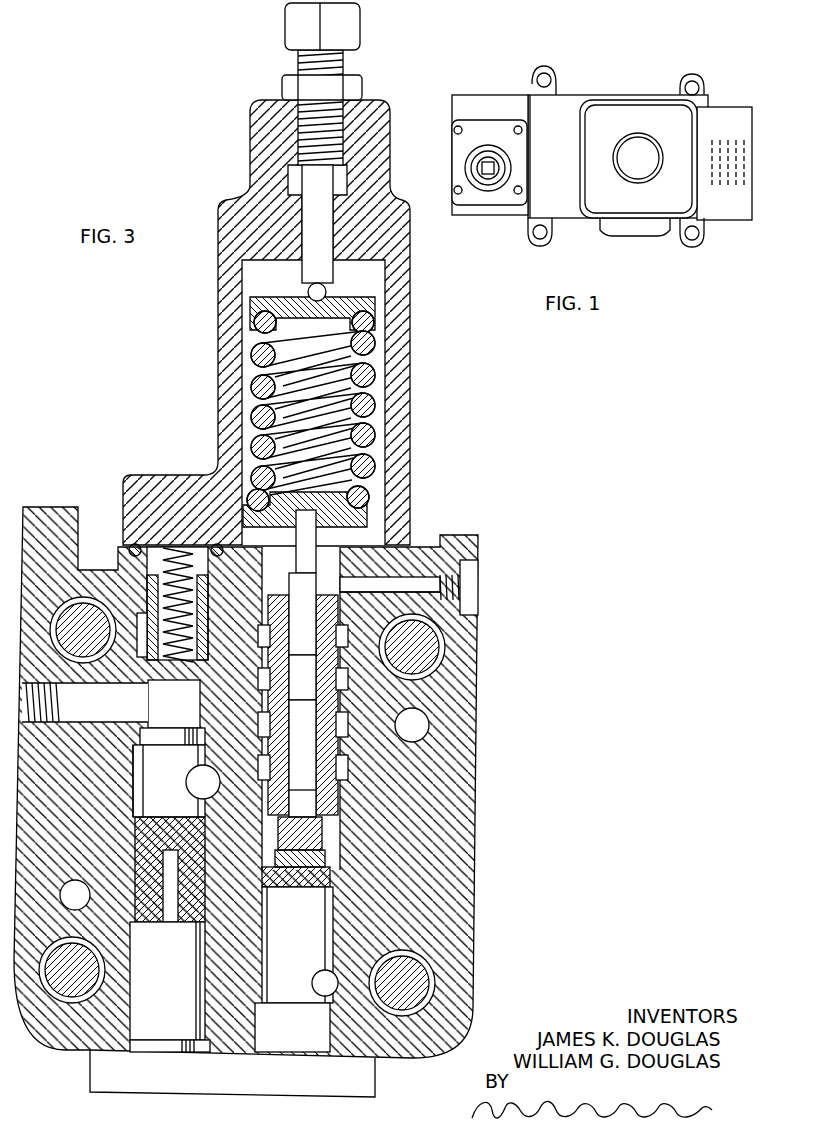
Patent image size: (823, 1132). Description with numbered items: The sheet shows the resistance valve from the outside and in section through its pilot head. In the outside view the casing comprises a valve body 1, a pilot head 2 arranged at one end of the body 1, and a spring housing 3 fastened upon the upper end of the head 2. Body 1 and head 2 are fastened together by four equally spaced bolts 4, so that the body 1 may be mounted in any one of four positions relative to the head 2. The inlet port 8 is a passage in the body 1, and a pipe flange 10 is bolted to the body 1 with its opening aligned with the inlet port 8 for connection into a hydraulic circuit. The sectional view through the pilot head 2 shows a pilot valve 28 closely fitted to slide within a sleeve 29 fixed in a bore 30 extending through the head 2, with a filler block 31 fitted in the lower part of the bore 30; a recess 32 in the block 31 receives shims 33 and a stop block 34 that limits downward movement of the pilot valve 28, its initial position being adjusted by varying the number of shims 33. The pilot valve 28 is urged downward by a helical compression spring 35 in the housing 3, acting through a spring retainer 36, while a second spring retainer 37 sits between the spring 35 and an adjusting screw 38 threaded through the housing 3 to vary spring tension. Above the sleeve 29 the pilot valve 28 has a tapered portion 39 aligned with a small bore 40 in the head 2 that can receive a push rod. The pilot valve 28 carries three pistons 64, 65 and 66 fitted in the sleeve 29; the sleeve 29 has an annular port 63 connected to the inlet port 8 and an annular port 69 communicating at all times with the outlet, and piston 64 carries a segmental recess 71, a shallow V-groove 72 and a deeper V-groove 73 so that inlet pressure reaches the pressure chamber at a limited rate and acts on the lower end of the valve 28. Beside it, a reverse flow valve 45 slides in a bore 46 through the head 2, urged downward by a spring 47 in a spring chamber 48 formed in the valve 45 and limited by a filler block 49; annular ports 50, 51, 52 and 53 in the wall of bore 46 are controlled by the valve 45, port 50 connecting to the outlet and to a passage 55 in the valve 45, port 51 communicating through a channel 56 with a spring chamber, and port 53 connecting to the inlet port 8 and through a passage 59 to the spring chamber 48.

In FIG. 1, the valve body 1 is at (570, 157).
In FIG. 3, the pilot head 2 is at (460, 832).
In FIG. 1, the pilot head 2 is at (473, 116).
In FIG. 3, the spring housing 3 is at (398, 372).
In FIG. 1, the spring housing 3 is at (482, 66).
In FIG. 3, the bolts 4 is at (90, 638).
In FIG. 1, the inlet port 8 is at (644, 165).
In FIG. 1, the pipe flange 10 is at (680, 210).
In FIG. 3, the pilot valve 28 is at (312, 676).
In FIG. 3, the sleeve 29 is at (340, 748).
In FIG. 3, the bore 30 is at (325, 950).
In FIG. 3, the filler block 31 is at (305, 997).
In FIG. 3, the recess 32 is at (327, 857).
In FIG. 3, the shims 33 is at (275, 887).
In FIG. 3, the stop block 34 is at (330, 833).
In FIG. 3, the helical compression spring 35 is at (372, 407).
In FIG. 3, the spring retainer 36 is at (368, 520).
In FIG. 3, the second spring retainer 37 is at (368, 305).
In FIG. 3, the adjusting screw 38 is at (322, 60).
In FIG. 3, the tapered portion 39 is at (303, 585).
In FIG. 3, the small bore 40 is at (390, 585).
In FIG. 3, the reverse flow valve 45 is at (186, 718).
In FIG. 3, the bore 46 is at (152, 1045).
In FIG. 3, the spring 47 is at (185, 548).
In FIG. 3, the spring chamber 48 is at (130, 551).
In FIG. 3, the filler block 49 is at (171, 997).
In FIG. 3, the port 50 is at (140, 822).
In FIG. 3, the port 51 is at (135, 773).
In FIG. 3, the port 52 is at (148, 712).
In FIG. 3, the port 53 is at (210, 660).
In FIG. 3, the passage 55 is at (172, 922).
In FIG. 3, the channel 56 is at (192, 775).
In FIG. 3, the passage 59 is at (208, 632).
In FIG. 3, the annular groove or port 63 is at (262, 765).
In FIG. 3, the piston 64 is at (258, 796).
In FIG. 3, the piston 65 is at (340, 712).
In FIG. 3, the piston 66 is at (312, 616).
In FIG. 3, the annular groove or port 69 is at (390, 608).
In FIG. 3, the segmental recess 71 is at (311, 732).
In FIG. 3, the shallow V-groove 72 is at (347, 772).
In FIG. 3, the deeper V-groove 73 is at (322, 803).